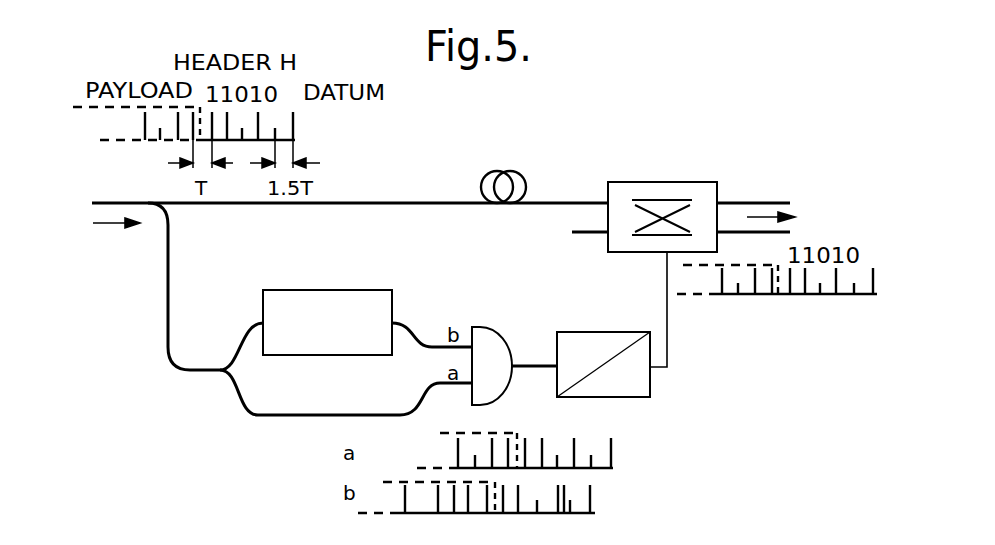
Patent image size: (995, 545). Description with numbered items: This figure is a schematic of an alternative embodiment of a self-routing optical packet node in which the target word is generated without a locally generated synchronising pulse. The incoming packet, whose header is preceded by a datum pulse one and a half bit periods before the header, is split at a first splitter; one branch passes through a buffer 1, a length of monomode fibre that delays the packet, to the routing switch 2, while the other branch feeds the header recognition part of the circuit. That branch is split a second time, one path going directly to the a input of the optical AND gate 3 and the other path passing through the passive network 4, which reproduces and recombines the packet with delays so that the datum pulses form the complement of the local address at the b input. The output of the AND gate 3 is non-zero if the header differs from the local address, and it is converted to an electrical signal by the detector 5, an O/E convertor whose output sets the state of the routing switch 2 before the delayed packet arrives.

The buffer 1 is at (519, 173).
The routing switch 2 is at (705, 186).
The AND gate 3 is at (493, 353).
The passive network 4 is at (330, 298).
The detector 5 is at (642, 388).